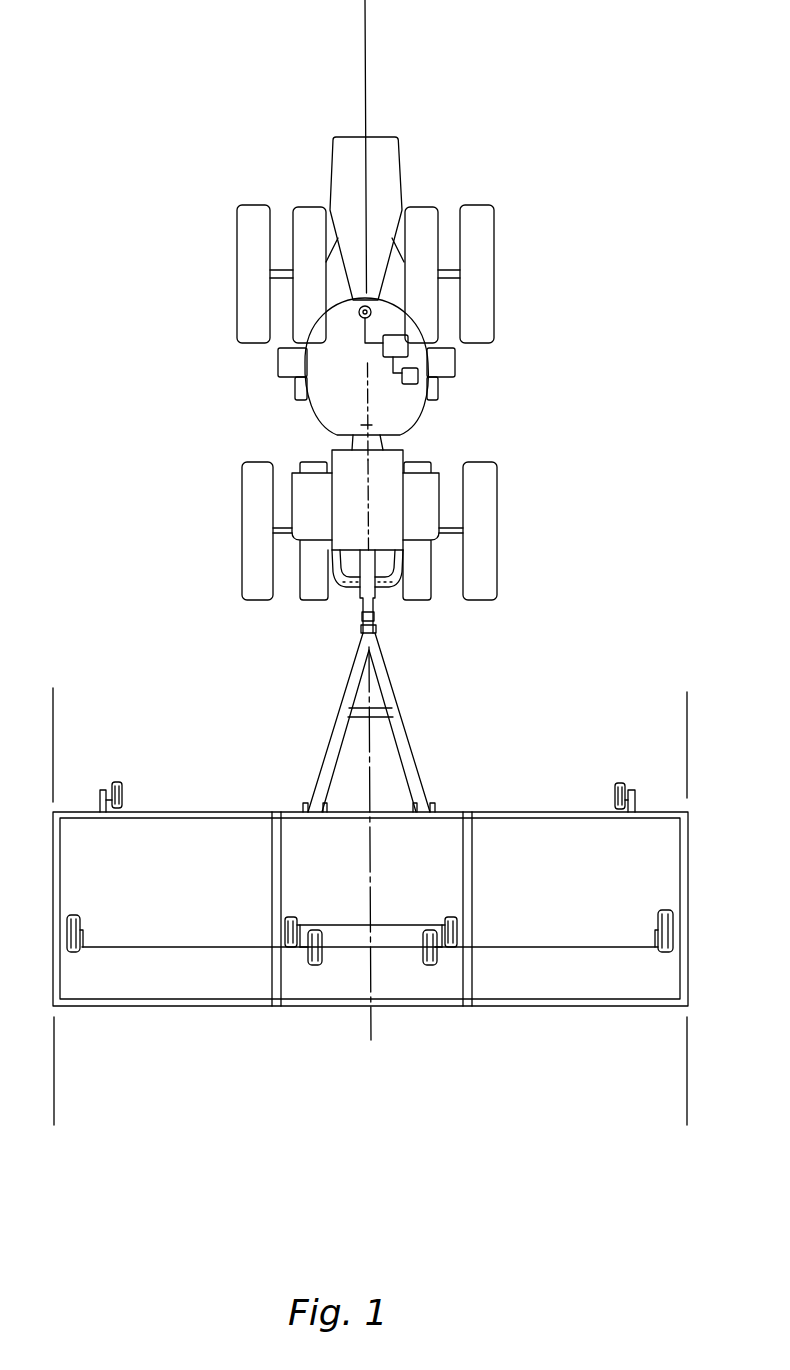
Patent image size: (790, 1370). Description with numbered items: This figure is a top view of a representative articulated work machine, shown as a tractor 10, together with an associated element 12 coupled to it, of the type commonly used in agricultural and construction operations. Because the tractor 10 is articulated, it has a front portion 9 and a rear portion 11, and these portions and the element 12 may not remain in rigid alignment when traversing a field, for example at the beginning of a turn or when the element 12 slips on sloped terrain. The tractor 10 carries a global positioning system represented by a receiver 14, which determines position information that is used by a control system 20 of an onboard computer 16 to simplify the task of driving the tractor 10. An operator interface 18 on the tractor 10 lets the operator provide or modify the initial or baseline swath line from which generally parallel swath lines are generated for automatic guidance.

The front portion 9 is at (272, 362).
The tractor 10 is at (414, 464).
The rear portion 11 is at (237, 530).
The element 12 is at (509, 805).
The receiver 14 is at (372, 311).
The onboard computer 16 is at (494, 354).
The operator interface 18 is at (412, 377).
The control system 20 is at (400, 347).